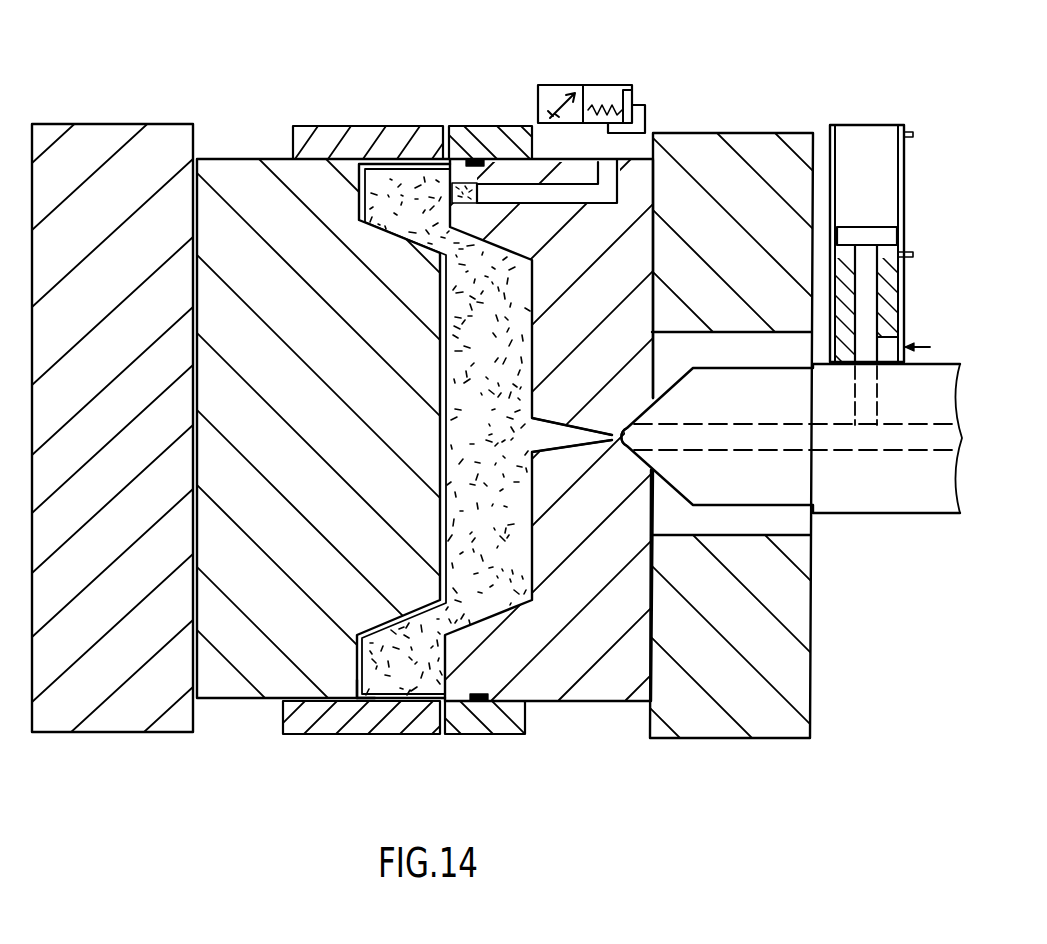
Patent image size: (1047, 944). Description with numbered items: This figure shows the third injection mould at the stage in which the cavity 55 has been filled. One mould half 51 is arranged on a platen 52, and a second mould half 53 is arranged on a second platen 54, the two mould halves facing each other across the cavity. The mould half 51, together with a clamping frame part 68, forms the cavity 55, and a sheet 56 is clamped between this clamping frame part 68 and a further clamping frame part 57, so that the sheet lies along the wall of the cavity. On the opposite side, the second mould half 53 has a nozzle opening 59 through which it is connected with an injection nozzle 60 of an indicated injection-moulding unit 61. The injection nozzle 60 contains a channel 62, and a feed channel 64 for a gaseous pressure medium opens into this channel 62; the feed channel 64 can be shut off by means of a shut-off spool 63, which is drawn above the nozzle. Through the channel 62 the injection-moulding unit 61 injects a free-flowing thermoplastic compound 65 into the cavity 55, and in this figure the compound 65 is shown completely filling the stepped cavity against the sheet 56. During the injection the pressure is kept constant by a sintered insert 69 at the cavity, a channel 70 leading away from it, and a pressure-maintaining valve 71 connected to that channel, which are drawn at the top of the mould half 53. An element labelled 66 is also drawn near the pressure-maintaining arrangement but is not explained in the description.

The mould half 51 is at (228, 685).
The platen 52 is at (112, 713).
The second mould half 53 is at (603, 685).
The second platen 54 is at (753, 720).
The cavity 55 is at (403, 670).
The sheet 56 is at (377, 713).
The clamping frame part 57 is at (508, 718).
The nozzle opening 59 is at (787, 478).
The injection nozzle 60 is at (642, 438).
The injection-moulding unit 61 is at (927, 480).
The channel 62 is at (893, 443).
The shut-off spool 63 is at (867, 297).
The feed channel 64 is at (865, 392).
The thermoplastic compound 65 is at (427, 783).
The pressure sensor 66 is at (513, 160).
The clamping frame part 68 is at (340, 722).
The sintered insert 69 is at (472, 158).
The channel 70 is at (605, 192).
The pressure-maintaining valve 71 is at (633, 90).